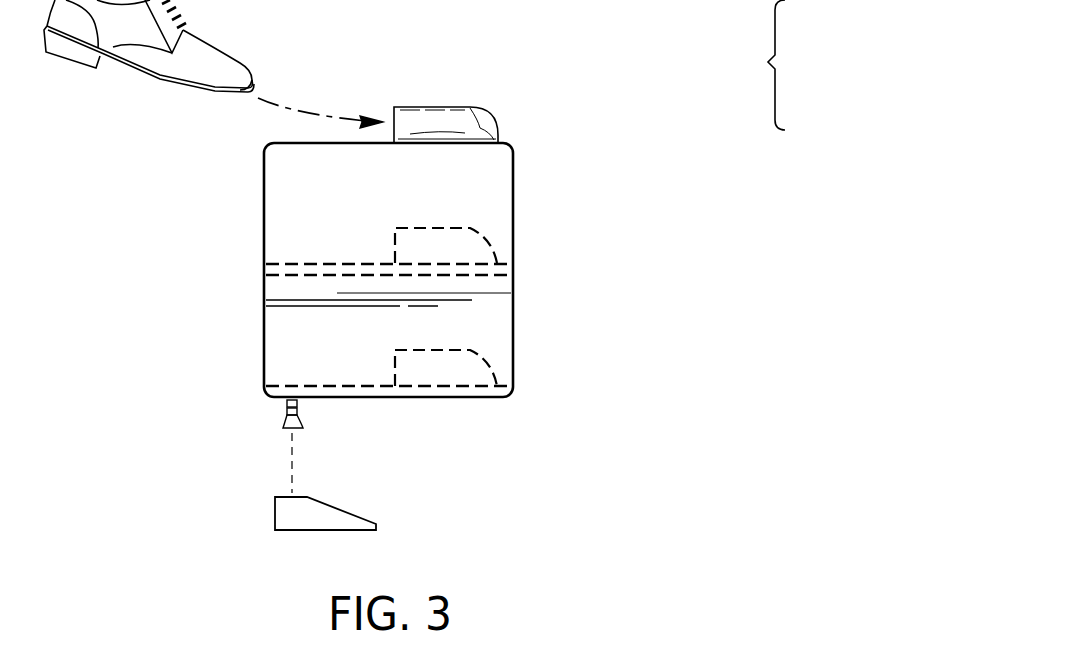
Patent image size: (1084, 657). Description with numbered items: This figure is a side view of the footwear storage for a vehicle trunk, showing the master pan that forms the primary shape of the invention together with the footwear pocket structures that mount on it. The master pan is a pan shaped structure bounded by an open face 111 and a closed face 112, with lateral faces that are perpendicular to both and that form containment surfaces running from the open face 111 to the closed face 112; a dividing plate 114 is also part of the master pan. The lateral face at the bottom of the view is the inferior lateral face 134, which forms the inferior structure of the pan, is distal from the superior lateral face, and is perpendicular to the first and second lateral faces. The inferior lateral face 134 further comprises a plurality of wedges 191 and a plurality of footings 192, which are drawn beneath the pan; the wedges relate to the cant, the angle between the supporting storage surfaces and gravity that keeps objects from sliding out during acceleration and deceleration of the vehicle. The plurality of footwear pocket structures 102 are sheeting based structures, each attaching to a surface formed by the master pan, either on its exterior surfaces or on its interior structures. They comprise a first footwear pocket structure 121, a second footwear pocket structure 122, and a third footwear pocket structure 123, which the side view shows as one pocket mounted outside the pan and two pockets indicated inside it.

The plurality of footwear pocket structures 102 is at (771, 65).
The open face 111 is at (264, 215).
The closed face 112 is at (514, 250).
The dividing plate 114 is at (318, 262).
The first footwear pocket structure 121 is at (448, 120).
The second footwear pocket structure 122 is at (465, 236).
The third footwear pocket structure 123 is at (455, 365).
The inferior lateral face 134 is at (405, 398).
The plurality of wedges 191 is at (303, 530).
The plurality of footings 192 is at (283, 425).